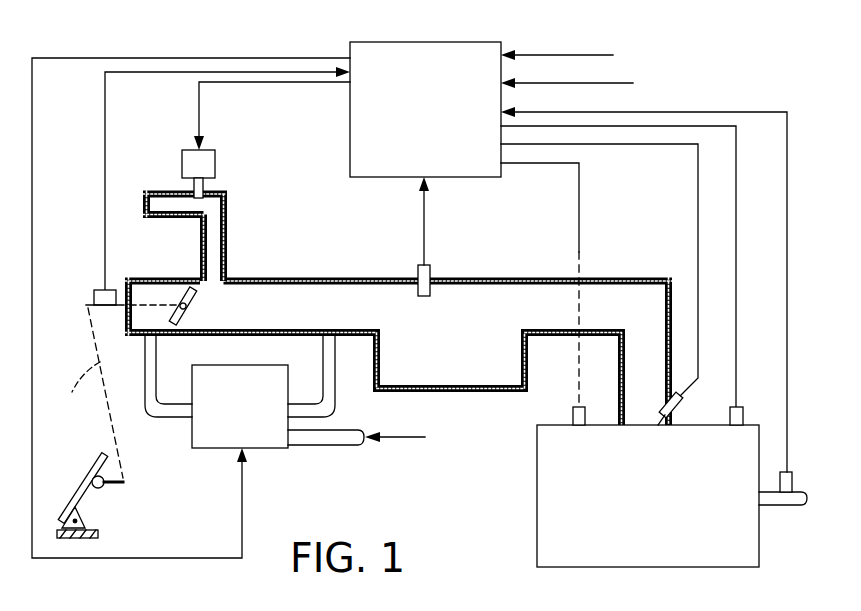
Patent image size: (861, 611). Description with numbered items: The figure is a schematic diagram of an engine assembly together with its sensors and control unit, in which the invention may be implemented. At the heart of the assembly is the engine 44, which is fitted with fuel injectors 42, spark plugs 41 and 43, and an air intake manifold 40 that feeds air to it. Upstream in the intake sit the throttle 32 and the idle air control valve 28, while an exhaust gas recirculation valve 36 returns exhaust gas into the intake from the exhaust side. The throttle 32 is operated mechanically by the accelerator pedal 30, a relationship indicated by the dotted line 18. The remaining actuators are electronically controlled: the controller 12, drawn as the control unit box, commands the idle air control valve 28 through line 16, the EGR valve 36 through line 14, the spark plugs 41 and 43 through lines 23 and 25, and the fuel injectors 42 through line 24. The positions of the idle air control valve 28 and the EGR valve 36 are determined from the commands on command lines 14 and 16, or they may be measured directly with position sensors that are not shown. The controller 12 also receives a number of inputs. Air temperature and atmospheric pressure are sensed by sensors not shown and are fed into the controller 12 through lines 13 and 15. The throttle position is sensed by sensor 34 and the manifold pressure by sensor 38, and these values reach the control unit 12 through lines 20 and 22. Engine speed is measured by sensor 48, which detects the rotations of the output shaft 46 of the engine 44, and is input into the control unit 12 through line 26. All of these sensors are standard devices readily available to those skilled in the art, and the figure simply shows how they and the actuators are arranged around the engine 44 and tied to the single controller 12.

The controller 12 is at (385, 178).
The air temperature input line 13 is at (568, 54).
The EGR valve command line 14 is at (33, 265).
The atmospheric pressure input line 15 is at (609, 85).
The IAC valve command line 16 is at (246, 181).
The dotted line 18 is at (92, 393).
The throttle position input line 20 is at (105, 157).
The manifold pressure input line 22 is at (424, 213).
The spark plug control line 23 is at (578, 242).
The fuel injector control line 24 is at (698, 170).
The spark plug control line 25 is at (736, 212).
The engine speed input line 26 is at (787, 305).
The idle air control (IAC) valve 28 is at (195, 165).
The accelerator pedal 30 is at (97, 535).
The throttle 32 is at (182, 318).
The throttle position sensor 34 is at (108, 290).
The exhaust gas recirculation (EGR) valve 36 is at (255, 375).
The manifold pressure sensor 38 is at (432, 276).
The air intake manifold 40 is at (457, 368).
The spark plug 41 is at (572, 408).
The fuel injector 42 is at (675, 409).
The spark plug 43 is at (743, 414).
The engine 44 is at (558, 494).
The output shaft 46 is at (779, 508).
The engine speed sensor 48 is at (793, 481).